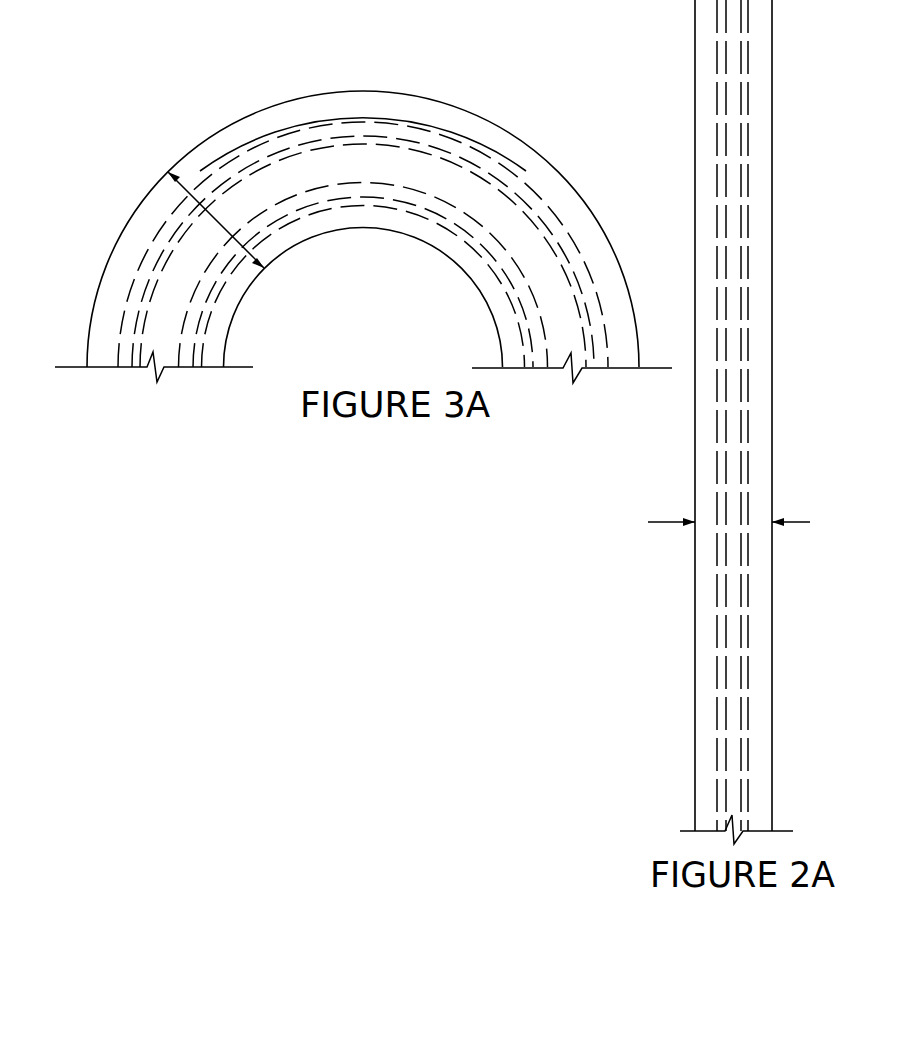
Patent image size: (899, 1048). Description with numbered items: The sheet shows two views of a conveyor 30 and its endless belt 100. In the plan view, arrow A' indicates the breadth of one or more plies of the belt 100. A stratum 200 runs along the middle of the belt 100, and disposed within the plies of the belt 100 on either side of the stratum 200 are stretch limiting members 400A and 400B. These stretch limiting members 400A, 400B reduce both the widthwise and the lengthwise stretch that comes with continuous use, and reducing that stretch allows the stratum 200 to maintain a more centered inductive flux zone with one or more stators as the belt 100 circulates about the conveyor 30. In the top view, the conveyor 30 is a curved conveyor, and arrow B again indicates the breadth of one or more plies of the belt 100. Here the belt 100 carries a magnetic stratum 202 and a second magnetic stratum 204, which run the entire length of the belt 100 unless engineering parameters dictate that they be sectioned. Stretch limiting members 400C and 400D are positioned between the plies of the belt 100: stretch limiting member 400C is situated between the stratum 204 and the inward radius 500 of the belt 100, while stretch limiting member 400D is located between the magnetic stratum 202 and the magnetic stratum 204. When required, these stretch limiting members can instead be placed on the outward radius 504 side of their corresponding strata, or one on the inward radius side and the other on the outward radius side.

In FIG. 3A, the conveyor 30 is at (410, 78).
In FIG. 2A, the conveyor 30 is at (678, 668).
In FIG. 3A, the belt 100 is at (253, 128).
In FIG. 2A, the belt 100 is at (708, 606).
In FIG. 3A, the outward radius 504 is at (343, 92).
In FIG. 3A, the magnetic stratum 202 is at (542, 205).
In FIG. 3A, the magnetic stratum 204 is at (502, 260).
In FIG. 3A, the stretch limiting member 400D is at (176, 243).
In FIG. 3A, the stretch limiting member 400C is at (223, 280).
In FIG. 3A, the inward radius 500 is at (295, 248).
In FIG. 2A, the stretch limiting member 400A is at (717, 495).
In FIG. 2A, the stretch limiting member 400B is at (748, 497).
In FIG. 2A, the stratum 200 is at (733, 730).
In FIG. 3A, the arrow B is at (216, 220).
In FIG. 2A, the arrow A' is at (717, 522).